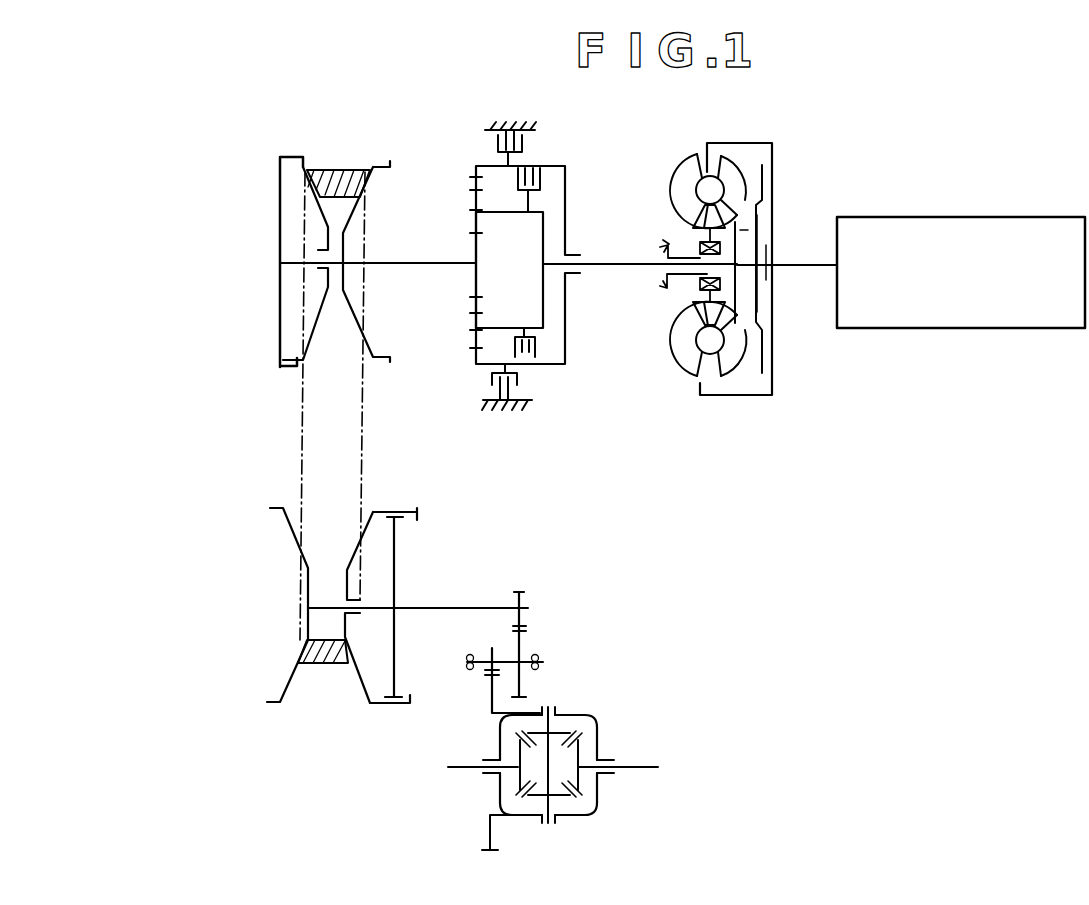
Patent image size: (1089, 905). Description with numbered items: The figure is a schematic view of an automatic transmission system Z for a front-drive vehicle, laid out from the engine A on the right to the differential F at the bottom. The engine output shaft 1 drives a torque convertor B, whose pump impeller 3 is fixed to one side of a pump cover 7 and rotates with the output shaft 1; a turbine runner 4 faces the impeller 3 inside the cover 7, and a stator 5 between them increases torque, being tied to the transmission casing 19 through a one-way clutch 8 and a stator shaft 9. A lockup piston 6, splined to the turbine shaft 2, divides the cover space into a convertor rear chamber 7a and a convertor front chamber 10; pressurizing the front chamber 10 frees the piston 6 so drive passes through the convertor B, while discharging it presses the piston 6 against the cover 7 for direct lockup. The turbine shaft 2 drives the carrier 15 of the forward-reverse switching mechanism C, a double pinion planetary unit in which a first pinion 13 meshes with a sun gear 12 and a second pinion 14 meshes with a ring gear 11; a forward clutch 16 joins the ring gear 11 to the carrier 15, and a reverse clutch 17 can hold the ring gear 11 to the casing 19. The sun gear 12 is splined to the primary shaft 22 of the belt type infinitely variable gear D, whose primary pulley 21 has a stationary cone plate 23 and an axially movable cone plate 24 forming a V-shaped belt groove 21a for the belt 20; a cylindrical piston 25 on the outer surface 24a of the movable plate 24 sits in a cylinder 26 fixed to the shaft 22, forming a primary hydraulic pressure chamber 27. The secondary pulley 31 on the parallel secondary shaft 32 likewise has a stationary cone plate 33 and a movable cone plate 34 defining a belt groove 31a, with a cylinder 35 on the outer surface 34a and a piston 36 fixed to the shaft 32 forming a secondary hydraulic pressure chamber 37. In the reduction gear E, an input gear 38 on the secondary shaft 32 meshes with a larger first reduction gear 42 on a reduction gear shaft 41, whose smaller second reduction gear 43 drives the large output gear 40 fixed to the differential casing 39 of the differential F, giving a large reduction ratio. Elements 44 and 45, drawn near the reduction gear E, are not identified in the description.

The output shaft 1 is at (797, 278).
The turbine shaft 2 is at (608, 263).
The pump impeller 3 is at (702, 162).
The turbine runner 4 is at (730, 170).
The stator 5 is at (690, 192).
The piston 6 is at (765, 173).
The pump cover 7 is at (775, 197).
The convertor rear chamber 7a is at (743, 238).
The one-way clutch 8 is at (698, 247).
The stator shaft 9 is at (660, 250).
The convertor front chamber 10 is at (765, 255).
The ring gear 11 is at (473, 357).
The sun gear 12 is at (483, 233).
The first pinion 13 is at (477, 213).
The second pinion 14 is at (477, 333).
The carrier 15 is at (545, 218).
The forward clutch 16 is at (538, 182).
The reverse clutch 17 is at (520, 152).
The transmission casing 19 is at (507, 123).
The belt 20 is at (340, 163).
The primary pulley 21 is at (312, 260).
The belt groove 21a is at (337, 212).
The primary shaft 22 is at (432, 262).
The stationary cone plate 23 is at (360, 208).
The movable cone plate 24 is at (320, 210).
The outer surface 24a is at (310, 320).
The cylindrical piston 25 is at (295, 176).
The cylinder 26 is at (278, 227).
The primary hydraulic pressure chamber 27 is at (293, 242).
The secondary pulley 31 is at (329, 561).
The belt groove 31a is at (302, 680).
The secondary shaft 32 is at (467, 608).
The stationary cone plate 33 is at (287, 530).
The movable cone plate 34 is at (367, 532).
The outer surface 34a is at (375, 703).
The cylinder 35 is at (413, 510).
The piston 36 is at (398, 590).
The secondary hydraulic pressure chamber 37 is at (380, 653).
The input gear 38 is at (522, 592).
The differential casing 39 is at (520, 815).
The output gear 40 is at (490, 690).
The reduction gear shaft 41 is at (525, 670).
The first reduction gear 42 is at (523, 638).
The second reduction gear 43 is at (490, 653).
The gear 44 is at (473, 663).
The bearing 45 is at (540, 653).
The engine A is at (977, 202).
The torque convertor B is at (720, 268).
The forward-reverse switching mechanism C is at (521, 252).
The belt type infinitely variable gear D is at (187, 300).
The reduction gear E is at (536, 645).
The differential F is at (555, 787).
The automatic transmission system Z is at (229, 168).